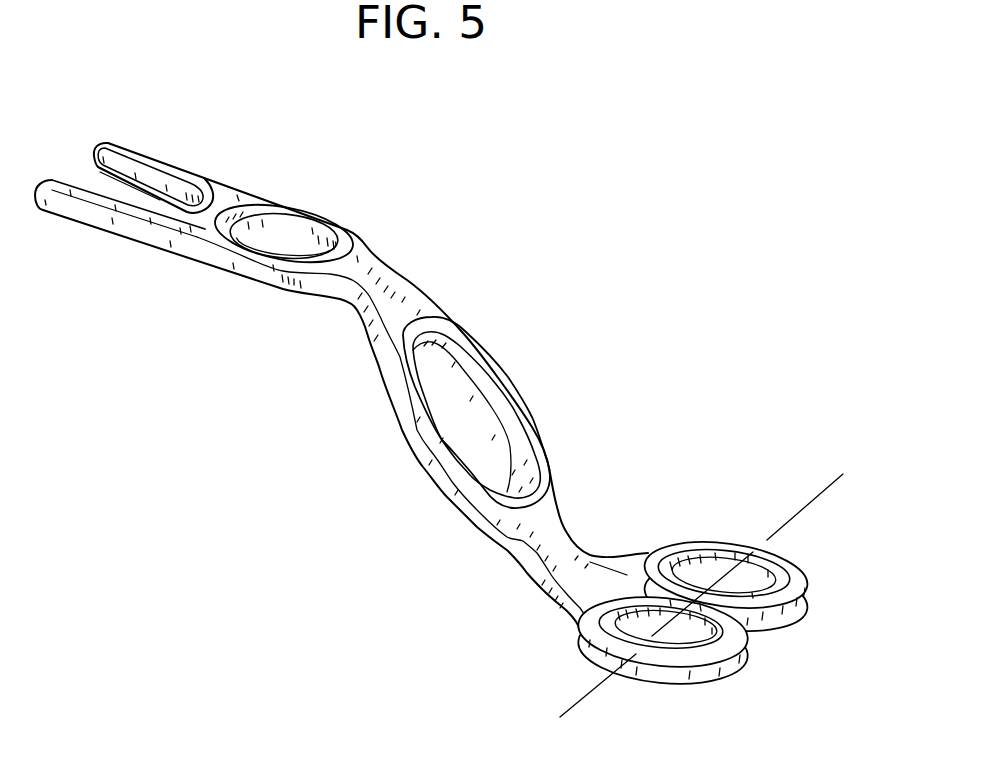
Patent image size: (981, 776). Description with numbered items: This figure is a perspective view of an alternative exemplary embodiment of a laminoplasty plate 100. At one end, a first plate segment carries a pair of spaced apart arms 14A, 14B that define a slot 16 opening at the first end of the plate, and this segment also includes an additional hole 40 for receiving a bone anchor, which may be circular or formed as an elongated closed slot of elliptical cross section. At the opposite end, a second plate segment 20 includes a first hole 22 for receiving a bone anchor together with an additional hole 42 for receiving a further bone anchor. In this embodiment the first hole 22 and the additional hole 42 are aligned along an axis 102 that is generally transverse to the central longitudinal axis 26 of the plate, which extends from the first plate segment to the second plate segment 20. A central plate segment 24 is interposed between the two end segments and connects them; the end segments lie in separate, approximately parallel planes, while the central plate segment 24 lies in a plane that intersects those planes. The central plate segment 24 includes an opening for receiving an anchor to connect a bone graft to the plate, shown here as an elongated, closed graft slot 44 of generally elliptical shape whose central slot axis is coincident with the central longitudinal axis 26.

The laminoplasty plate 100 is at (441, 418).
The axis 102 is at (832, 484).
The arm 14A is at (63, 208).
The arm 14B is at (148, 156).
The slot 16 is at (87, 180).
The second plate segment 20 is at (583, 616).
The first hole 22 is at (677, 636).
The central plate segment 24 is at (425, 447).
The central longitudinal axis 26 is at (805, 629).
The additional hole 40 is at (308, 232).
The additional hole 42 is at (713, 567).
The graft slot 44 is at (484, 449).